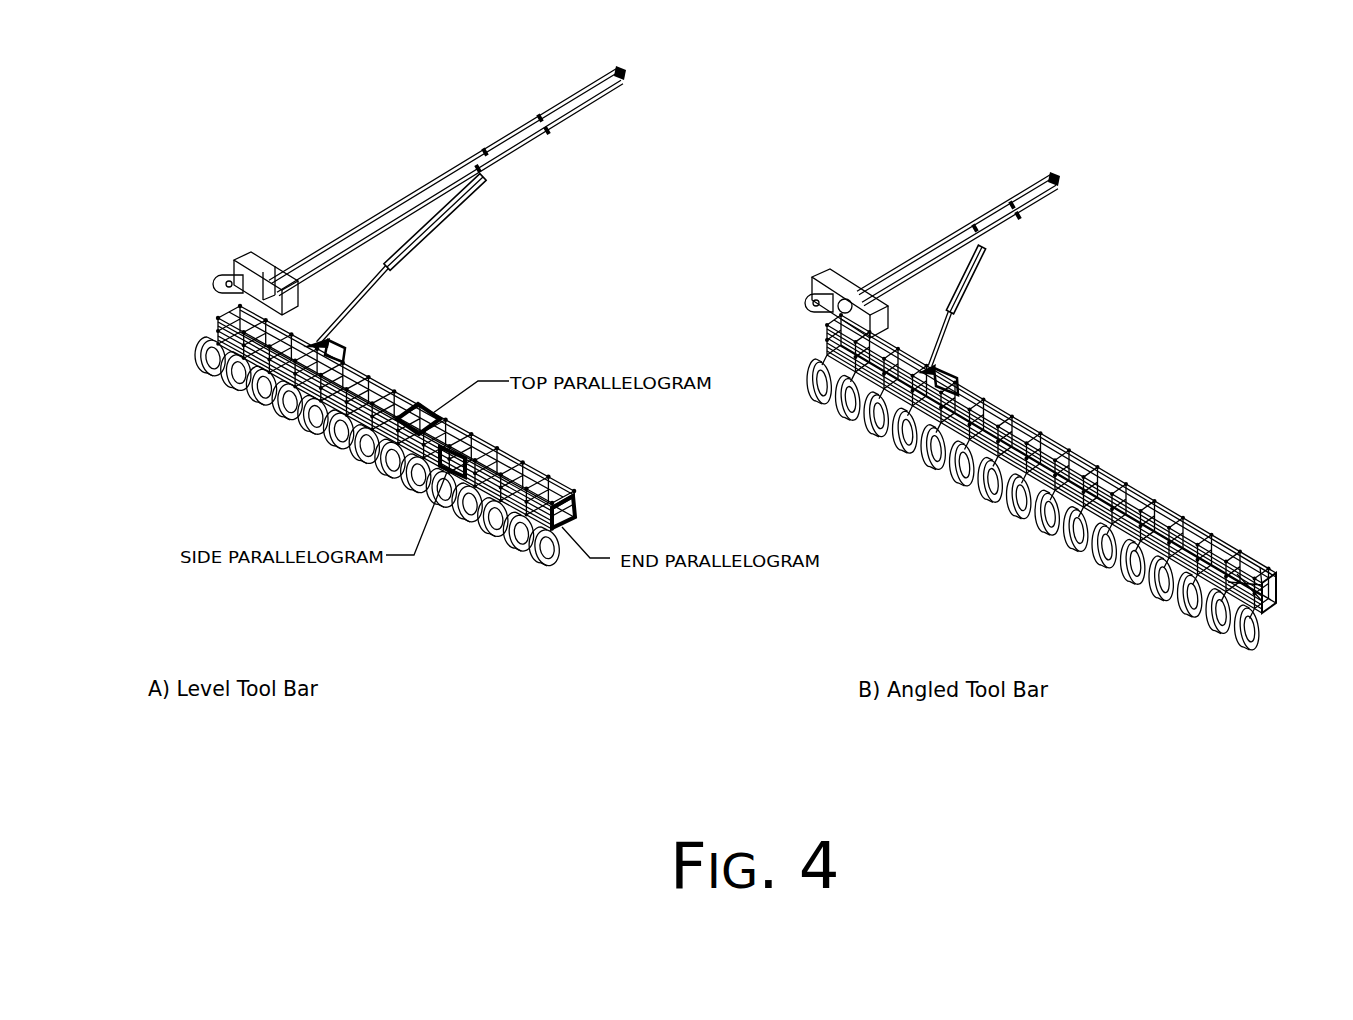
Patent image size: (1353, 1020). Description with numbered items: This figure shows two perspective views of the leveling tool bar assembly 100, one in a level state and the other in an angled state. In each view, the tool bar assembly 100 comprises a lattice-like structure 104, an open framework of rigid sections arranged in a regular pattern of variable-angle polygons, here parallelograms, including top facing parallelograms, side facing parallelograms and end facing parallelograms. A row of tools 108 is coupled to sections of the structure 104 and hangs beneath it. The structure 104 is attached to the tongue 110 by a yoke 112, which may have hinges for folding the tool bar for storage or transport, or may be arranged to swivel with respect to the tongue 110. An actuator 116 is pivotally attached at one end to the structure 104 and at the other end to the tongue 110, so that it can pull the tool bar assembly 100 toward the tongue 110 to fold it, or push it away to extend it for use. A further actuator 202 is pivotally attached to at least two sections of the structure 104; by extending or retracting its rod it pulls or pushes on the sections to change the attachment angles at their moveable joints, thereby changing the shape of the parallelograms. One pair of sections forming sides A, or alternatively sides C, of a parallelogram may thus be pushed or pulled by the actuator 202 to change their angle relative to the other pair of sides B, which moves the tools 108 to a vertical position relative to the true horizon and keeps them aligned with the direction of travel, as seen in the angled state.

The leveling tool bar assembly 100 is at (250, 228).
The lattice-like structure 104 is at (393, 390).
The tools 108 is at (518, 556).
The tongue 110 is at (517, 147).
The yoke 112 is at (245, 268).
The actuators 116 is at (420, 255).
The actuators 202 is at (333, 350).
The sides A is at (575, 507).
The sides B is at (556, 488).
The sides C is at (558, 505).